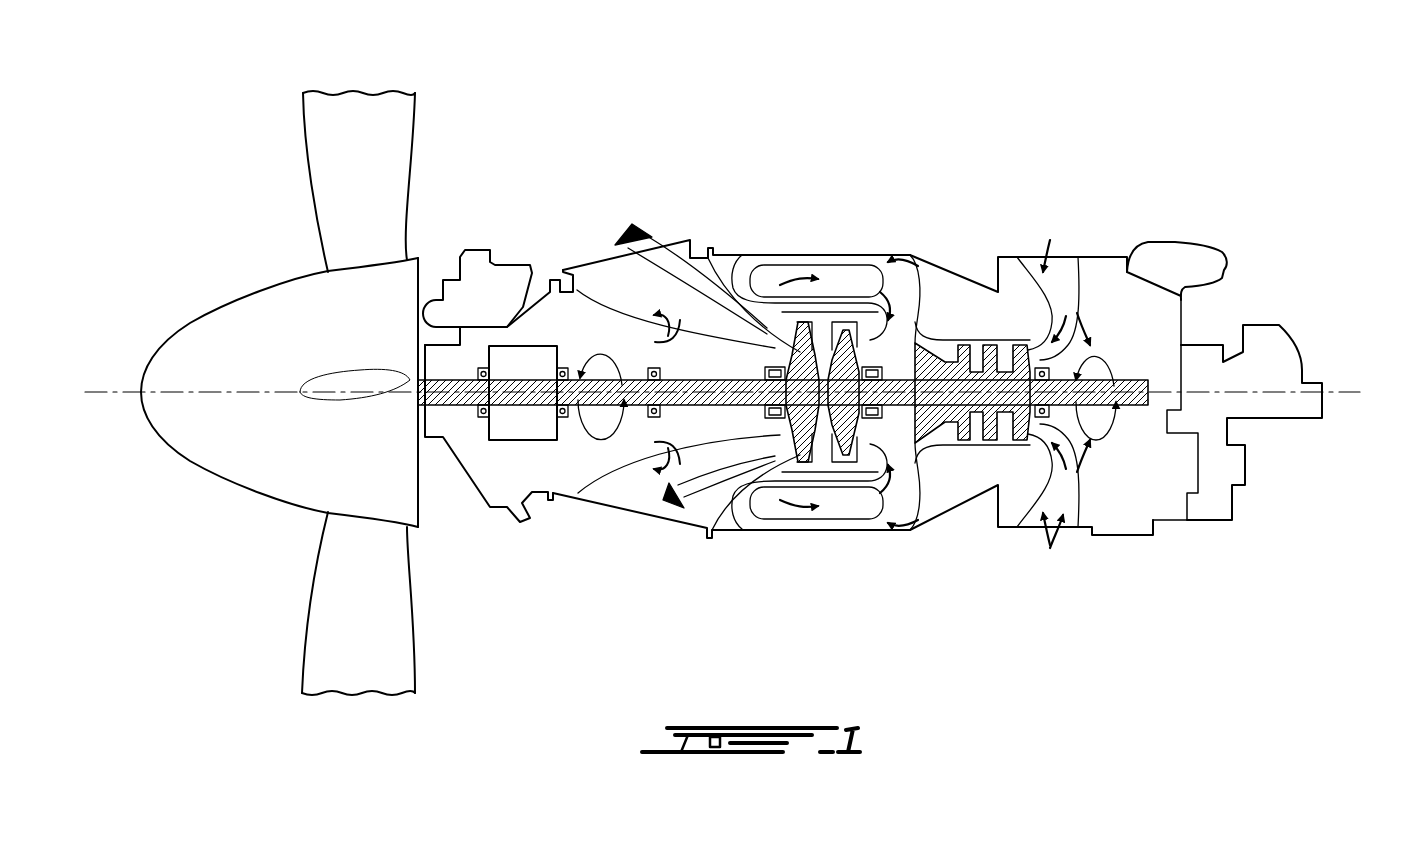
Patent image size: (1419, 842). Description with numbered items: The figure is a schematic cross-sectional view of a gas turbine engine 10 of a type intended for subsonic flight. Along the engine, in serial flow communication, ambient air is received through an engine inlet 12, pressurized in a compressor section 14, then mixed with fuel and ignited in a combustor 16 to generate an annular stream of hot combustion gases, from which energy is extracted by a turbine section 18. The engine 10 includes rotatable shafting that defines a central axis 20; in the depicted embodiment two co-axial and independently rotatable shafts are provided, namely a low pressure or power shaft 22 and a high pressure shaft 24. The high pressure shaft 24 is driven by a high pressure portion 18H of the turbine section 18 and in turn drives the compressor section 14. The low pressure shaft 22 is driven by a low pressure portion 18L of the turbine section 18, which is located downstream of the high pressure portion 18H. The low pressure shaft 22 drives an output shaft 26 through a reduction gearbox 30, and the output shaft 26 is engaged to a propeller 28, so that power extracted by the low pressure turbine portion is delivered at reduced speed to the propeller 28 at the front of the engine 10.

The gas turbine engine 10 is at (570, 132).
The engine inlet 12 is at (1065, 257).
The compressor section 14 is at (975, 465).
The combustor 16 is at (832, 285).
The turbine section 18 is at (839, 392).
The low pressure portion of the turbine section 18L is at (800, 322).
The high pressure portion of the turbine section 18H is at (847, 328).
The central axis 20 is at (1347, 390).
The low pressure shaft 22 is at (687, 400).
The high pressure shaft 24 is at (1060, 405).
The output shaft 26 is at (452, 407).
The propeller 28 is at (388, 662).
The reduction gearbox 30 is at (520, 428).